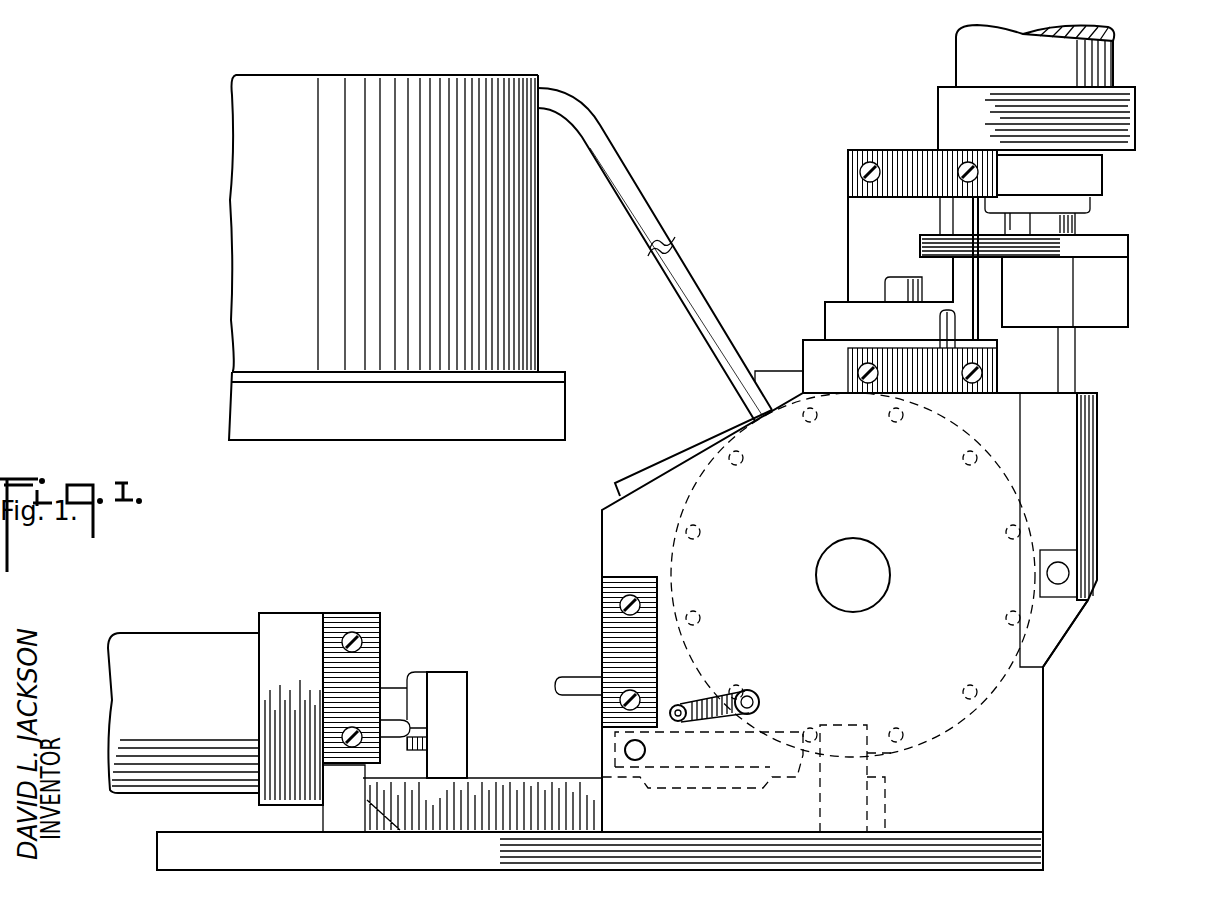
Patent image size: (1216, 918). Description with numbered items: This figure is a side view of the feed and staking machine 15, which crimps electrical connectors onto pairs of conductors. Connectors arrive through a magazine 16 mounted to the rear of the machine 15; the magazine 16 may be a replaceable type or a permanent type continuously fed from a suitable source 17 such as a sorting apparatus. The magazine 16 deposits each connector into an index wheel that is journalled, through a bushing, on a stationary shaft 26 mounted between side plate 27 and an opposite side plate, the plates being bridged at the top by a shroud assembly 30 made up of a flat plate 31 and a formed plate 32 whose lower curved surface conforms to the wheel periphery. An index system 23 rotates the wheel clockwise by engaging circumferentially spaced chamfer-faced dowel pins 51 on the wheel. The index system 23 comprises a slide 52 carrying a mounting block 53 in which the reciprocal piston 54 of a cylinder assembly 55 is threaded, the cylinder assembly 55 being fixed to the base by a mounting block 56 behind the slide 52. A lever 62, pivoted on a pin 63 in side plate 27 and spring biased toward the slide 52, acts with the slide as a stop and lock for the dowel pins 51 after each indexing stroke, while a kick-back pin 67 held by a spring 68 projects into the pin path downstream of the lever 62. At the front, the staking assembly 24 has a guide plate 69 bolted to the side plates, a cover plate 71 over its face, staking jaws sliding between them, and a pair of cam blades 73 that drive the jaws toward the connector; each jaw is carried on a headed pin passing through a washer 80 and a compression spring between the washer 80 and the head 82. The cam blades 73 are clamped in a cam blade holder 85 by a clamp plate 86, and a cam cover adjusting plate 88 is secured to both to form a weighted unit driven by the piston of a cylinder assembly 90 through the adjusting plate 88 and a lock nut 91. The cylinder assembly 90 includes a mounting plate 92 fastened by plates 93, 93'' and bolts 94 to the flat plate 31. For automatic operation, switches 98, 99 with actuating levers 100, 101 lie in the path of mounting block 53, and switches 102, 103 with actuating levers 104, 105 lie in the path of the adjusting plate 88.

The feed and staking machine 15 is at (1145, 420).
The magazine 16 is at (697, 304).
The source 17 is at (530, 327).
The index system 23 is at (823, 712).
The staking assembly 24 is at (1130, 491).
The stationary shaft 26 is at (868, 557).
The side plate 27 is at (602, 535).
The shroud assembly 30 is at (796, 334).
The flat plate 31 is at (813, 350).
The formed plate 32 is at (765, 371).
The dowel pins 51 is at (739, 684).
The slide 52 is at (513, 790).
The mounting block 53 is at (452, 690).
The reciprocal piston 54 is at (388, 688).
The cylinder assembly 55 is at (183, 635).
The mounting block 56 is at (330, 782).
The lever 62 is at (697, 765).
The pin 63 is at (625, 746).
The kick-back pin 67 is at (756, 703).
The spring 68 is at (700, 702).
The guide plate 69 is at (1067, 617).
The cover plate 71 is at (1092, 545).
The cam blades 73 is at (1070, 375).
The washer 80 is at (1058, 552).
The head 82 is at (1046, 573).
The cam blade holder 85 is at (1053, 308).
The clamp plate 86 is at (1115, 292).
The cam cover adjusting plate 88 is at (1130, 245).
The cylinder assembly 90 is at (1192, 127).
The lock nut 91 is at (1076, 226).
The mounting plate 92 is at (1097, 172).
The plate 93 is at (865, 268).
The plate 93'' is at (925, 268).
The bolts 94 is at (888, 285).
The switch 98 is at (383, 613).
The switch 99 is at (602, 620).
The switch actuating lever 100 is at (427, 727).
The switch actuating lever 101 is at (568, 682).
The switch 102 is at (848, 172).
The switch 103 is at (866, 395).
The switch actuating lever 104 is at (947, 218).
The switch actuating lever 105 is at (943, 320).